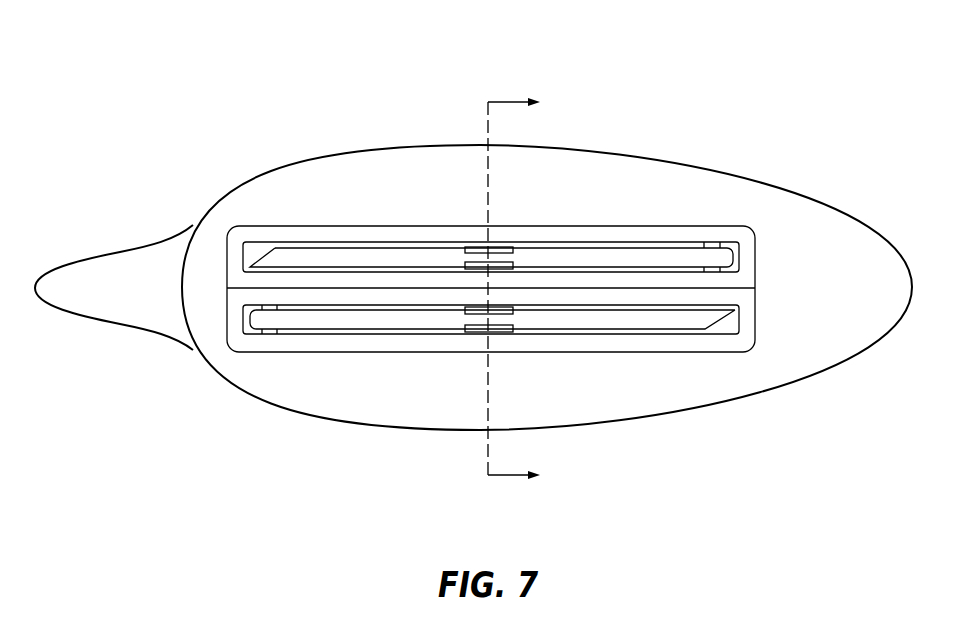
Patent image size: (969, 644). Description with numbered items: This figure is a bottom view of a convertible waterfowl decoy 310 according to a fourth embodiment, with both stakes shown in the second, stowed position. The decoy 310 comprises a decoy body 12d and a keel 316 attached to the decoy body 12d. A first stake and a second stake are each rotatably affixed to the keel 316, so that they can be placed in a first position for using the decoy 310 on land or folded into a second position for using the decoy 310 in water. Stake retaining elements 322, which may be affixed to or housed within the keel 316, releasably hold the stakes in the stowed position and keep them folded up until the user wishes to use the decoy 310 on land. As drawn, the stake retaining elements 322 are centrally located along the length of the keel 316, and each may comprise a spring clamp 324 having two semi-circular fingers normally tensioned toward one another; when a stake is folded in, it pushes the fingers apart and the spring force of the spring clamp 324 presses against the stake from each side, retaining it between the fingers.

The decoy 310 is at (235, 93).
The decoy body 12d is at (792, 385).
The keel 316 is at (678, 227).
The spring clamp 324 is at (480, 247).
The stake retaining element 322 is at (510, 240).